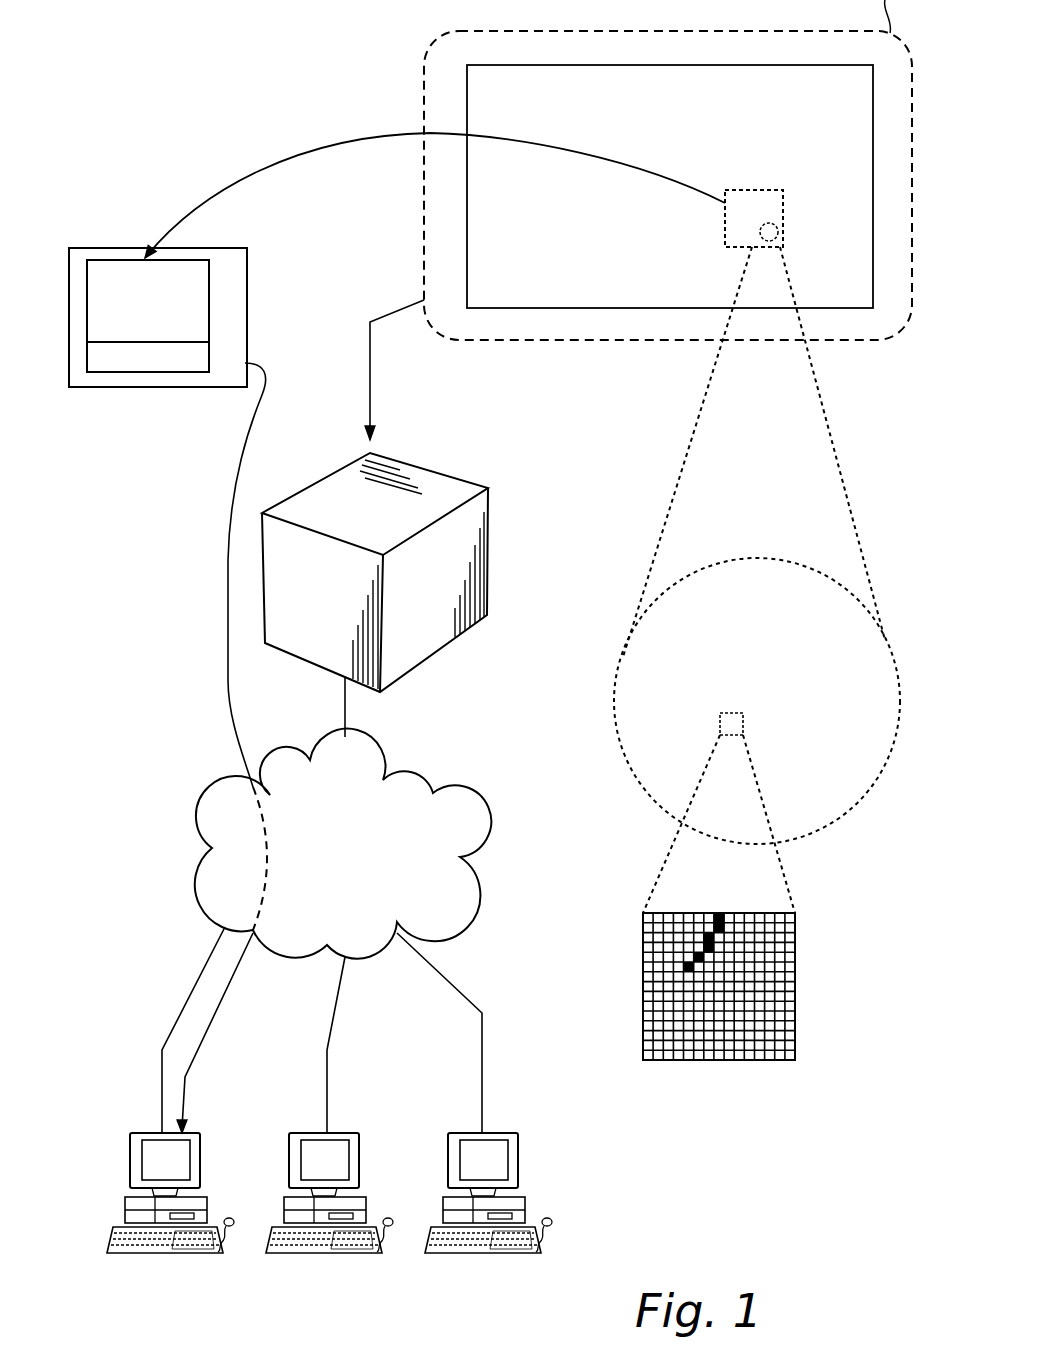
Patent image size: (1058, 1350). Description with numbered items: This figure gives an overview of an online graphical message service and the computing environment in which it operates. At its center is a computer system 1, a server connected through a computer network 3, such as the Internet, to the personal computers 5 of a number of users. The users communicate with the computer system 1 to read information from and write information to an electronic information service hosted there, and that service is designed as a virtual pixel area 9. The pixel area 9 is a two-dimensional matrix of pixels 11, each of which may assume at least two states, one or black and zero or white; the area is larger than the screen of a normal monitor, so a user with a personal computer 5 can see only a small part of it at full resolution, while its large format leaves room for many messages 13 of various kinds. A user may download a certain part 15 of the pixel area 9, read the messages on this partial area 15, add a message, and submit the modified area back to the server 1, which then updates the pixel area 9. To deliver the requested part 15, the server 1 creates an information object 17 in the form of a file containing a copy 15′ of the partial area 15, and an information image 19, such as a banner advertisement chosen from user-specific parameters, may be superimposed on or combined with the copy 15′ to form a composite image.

The computer system 1 is at (440, 555).
The computer network 3 is at (462, 875).
The personal computers 5 is at (130, 1160).
The virtual pixel area 9 is at (467, 100).
The pixels 11 is at (680, 970).
The messages 13 is at (742, 678).
The part of the pixel area 15 is at (737, 220).
The copy of the requested partial area 15′ is at (170, 307).
The information object 17 is at (110, 248).
The information image 19 is at (117, 357).